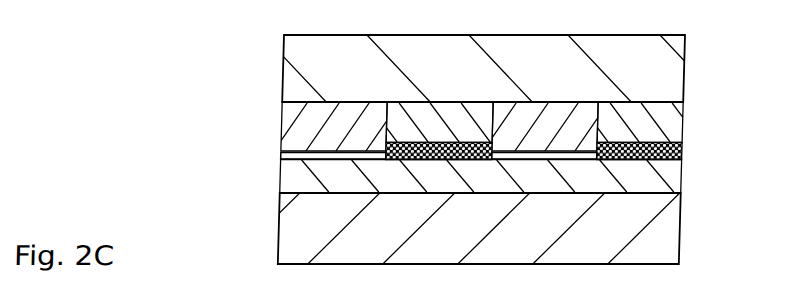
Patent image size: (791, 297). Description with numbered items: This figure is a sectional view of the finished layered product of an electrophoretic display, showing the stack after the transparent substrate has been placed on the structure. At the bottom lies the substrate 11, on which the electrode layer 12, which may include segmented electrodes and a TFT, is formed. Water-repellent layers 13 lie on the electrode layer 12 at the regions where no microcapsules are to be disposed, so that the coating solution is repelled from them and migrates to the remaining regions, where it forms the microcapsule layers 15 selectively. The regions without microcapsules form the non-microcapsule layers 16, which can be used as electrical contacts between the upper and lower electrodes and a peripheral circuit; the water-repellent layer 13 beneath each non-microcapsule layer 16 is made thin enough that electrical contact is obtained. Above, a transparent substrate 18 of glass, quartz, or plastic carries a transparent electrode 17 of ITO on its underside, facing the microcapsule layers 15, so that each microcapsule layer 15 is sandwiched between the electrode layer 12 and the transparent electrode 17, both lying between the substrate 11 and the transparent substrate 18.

The substrate 11 is at (657, 232).
The electrode layer 12 is at (659, 180).
The water-repellent layer 13 is at (290, 153).
The microcapsule layer 15 is at (660, 152).
The non-microcapsule layer 16 is at (302, 119).
The transparent electrode 17 is at (662, 125).
The transparent substrate 18 is at (659, 73).